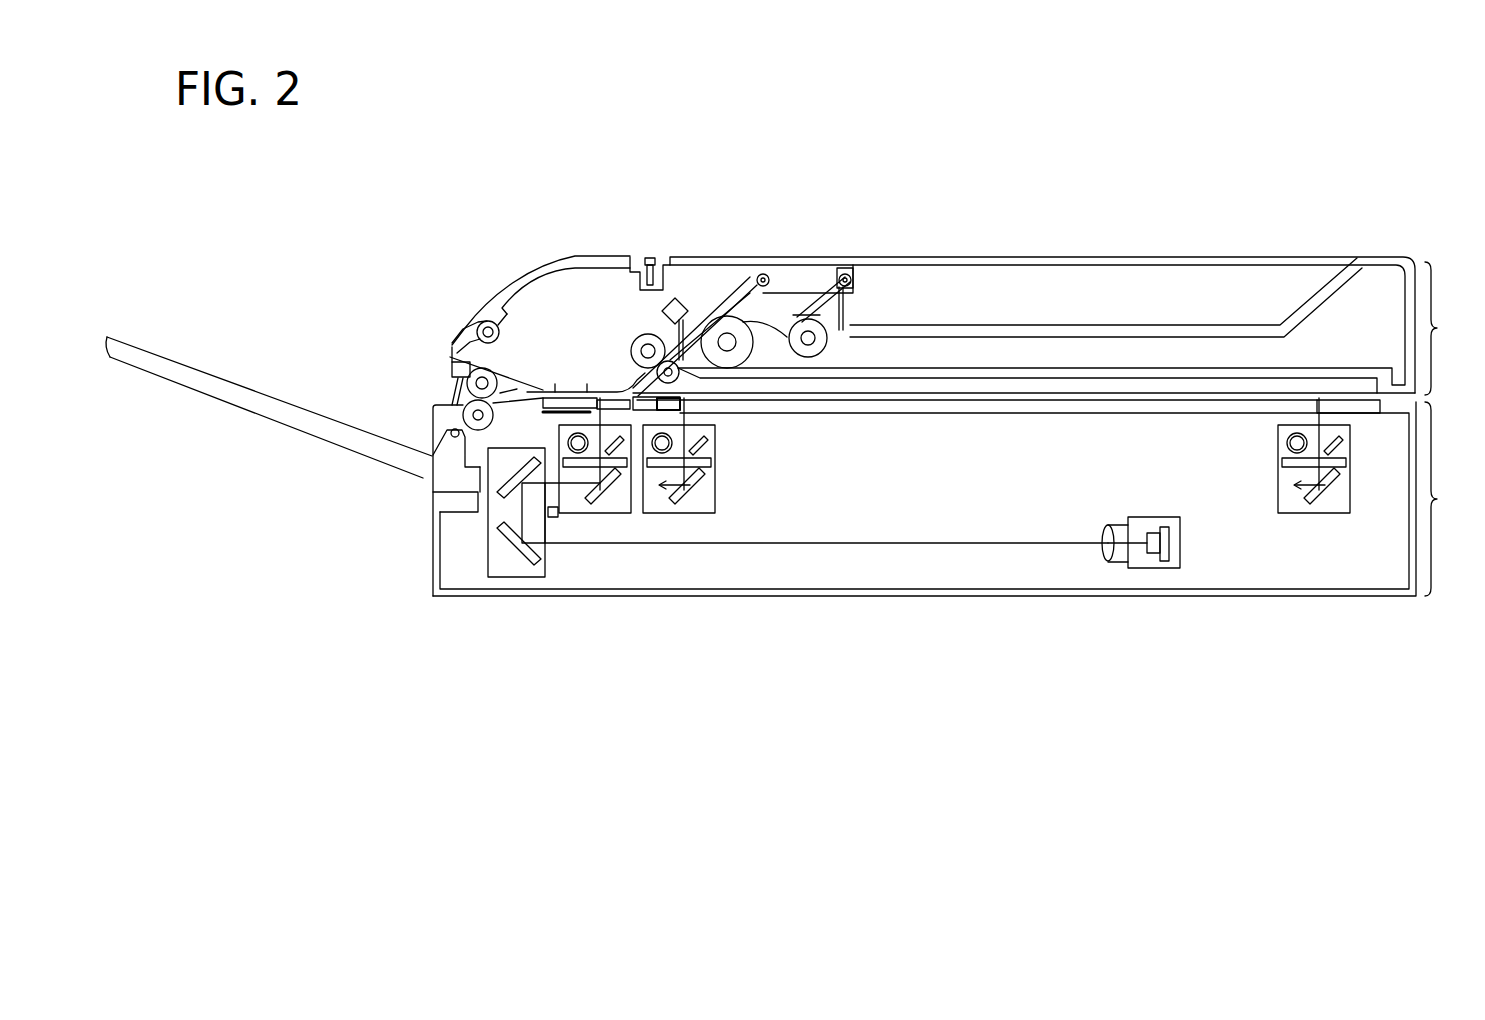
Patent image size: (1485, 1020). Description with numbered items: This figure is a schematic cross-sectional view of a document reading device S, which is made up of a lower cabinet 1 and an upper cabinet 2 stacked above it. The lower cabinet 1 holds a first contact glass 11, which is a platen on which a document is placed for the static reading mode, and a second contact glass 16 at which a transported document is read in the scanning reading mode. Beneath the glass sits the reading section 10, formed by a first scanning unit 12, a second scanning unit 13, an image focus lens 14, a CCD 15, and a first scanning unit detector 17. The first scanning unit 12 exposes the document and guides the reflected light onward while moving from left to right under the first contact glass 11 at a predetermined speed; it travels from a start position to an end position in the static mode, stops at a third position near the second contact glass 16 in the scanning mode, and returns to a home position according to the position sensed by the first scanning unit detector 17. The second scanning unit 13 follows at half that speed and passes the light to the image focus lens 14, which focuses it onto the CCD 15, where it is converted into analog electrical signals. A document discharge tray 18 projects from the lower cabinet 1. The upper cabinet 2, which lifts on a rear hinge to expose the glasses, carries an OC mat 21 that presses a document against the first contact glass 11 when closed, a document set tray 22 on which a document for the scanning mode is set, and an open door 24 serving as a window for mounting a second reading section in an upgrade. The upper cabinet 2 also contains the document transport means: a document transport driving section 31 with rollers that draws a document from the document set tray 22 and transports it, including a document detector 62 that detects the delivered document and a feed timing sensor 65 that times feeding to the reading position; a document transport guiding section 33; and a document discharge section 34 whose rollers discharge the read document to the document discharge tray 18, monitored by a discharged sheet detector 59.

The document reading device S is at (1121, 162).
The lower cabinet 1 is at (948, 497).
The upper cabinet 2 is at (1046, 326).
The reading section 10 is at (600, 566).
The first contact glass 11 is at (995, 412).
The first scanning unit 12 is at (633, 515).
The second scanning unit 13 is at (487, 560).
The image focus lens 14 is at (1104, 560).
The CCD 15 is at (1156, 568).
The second contact glass 16 is at (452, 345).
The first scanning unit detector 17 is at (553, 517).
The document discharge tray 18 is at (207, 380).
The OC mat 21 is at (1000, 385).
The document set tray 22 is at (1122, 323).
The open door 24 is at (515, 275).
The document transport driving section 31 is at (705, 288).
The document transport guiding section 33 is at (618, 388).
The document discharge section 34 is at (370, 343).
The discharged sheet detector 59 is at (453, 368).
The document detector 62 is at (843, 272).
The feed timing sensor 65 is at (672, 302).